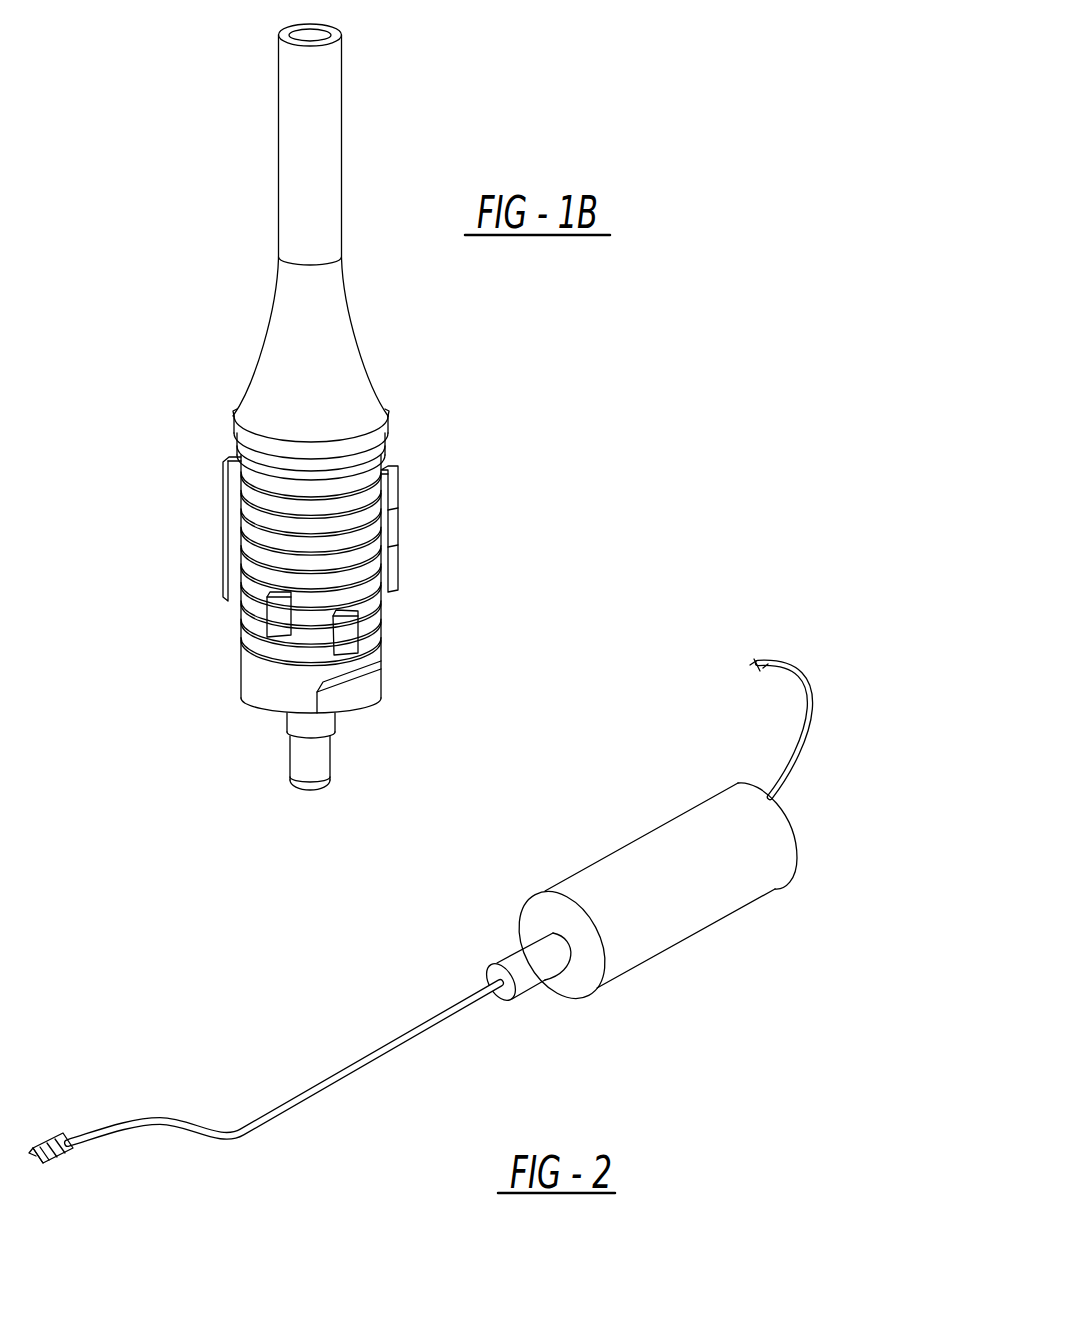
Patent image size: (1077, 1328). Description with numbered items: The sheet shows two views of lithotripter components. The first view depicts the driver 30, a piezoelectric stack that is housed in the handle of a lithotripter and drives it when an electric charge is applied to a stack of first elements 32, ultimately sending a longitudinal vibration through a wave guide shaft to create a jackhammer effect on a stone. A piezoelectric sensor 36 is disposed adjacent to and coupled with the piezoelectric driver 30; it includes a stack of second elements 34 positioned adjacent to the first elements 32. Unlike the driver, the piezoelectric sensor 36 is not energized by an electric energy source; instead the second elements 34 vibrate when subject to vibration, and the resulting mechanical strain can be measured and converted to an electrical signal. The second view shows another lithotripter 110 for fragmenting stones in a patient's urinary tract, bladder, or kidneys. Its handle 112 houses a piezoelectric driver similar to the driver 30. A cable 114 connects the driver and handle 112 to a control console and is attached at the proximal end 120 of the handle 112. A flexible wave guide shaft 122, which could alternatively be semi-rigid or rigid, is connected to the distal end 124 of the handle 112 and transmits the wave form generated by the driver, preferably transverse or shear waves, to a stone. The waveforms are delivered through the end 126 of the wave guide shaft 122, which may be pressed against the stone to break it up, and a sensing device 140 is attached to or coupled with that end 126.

In FIG. 1B, the piezoelectric driver 30 is at (157, 447).
In FIG. 1B, the first elements 32 is at (227, 450).
In FIG. 1B, the second elements 34 is at (247, 612).
In FIG. 1B, the piezoelectric sensor 36 is at (401, 647).
In FIG. 2, the lithotripter 110 is at (452, 931).
In FIG. 2, the handle 112 is at (602, 838).
In FIG. 2, the cable 114 is at (784, 686).
In FIG. 2, the proximal end 120 is at (798, 890).
In FIG. 2, the wave guide shaft 122 is at (333, 1083).
In FIG. 2, the distal end 124 is at (572, 1030).
In FIG. 2, the end 126 is at (48, 1130).
In FIG. 2, the sensing device 140 is at (52, 1157).